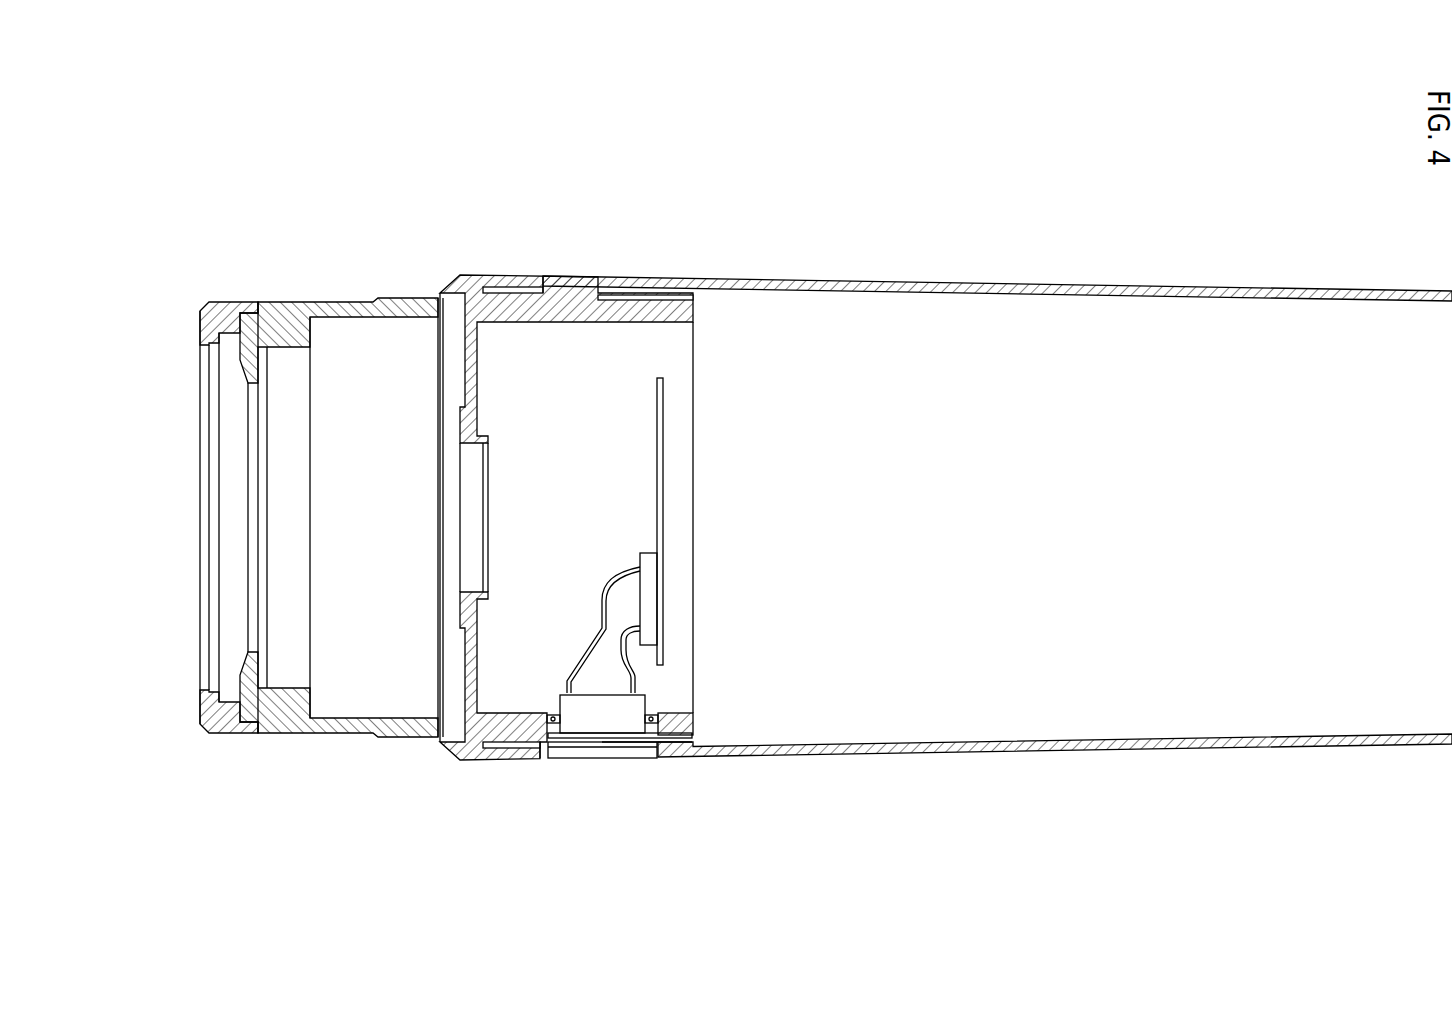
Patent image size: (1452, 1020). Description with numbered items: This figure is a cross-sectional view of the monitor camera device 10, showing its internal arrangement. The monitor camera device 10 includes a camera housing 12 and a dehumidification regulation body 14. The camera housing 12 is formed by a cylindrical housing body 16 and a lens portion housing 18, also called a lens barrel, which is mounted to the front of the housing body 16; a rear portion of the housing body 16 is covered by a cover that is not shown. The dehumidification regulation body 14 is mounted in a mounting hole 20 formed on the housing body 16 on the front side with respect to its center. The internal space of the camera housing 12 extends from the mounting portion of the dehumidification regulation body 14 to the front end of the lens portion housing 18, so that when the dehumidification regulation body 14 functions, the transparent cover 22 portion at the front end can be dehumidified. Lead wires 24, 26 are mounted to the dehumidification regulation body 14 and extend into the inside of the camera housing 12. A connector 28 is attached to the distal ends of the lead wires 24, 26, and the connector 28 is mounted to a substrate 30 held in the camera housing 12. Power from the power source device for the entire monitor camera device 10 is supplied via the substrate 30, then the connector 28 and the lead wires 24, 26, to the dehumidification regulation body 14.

The monitor camera device 10 is at (1039, 142).
The camera housing 12 is at (751, 265).
The dehumidification regulation body 14 is at (577, 738).
The cylindrical housing body 16 is at (950, 277).
The lens portion housing 18 is at (343, 300).
The mounting hole 20 is at (648, 713).
The transparent cover 22 is at (200, 513).
The lead wire 24 is at (578, 650).
The lead wire 26 is at (642, 680).
The connector 28 is at (648, 600).
The substrate 30 is at (665, 543).